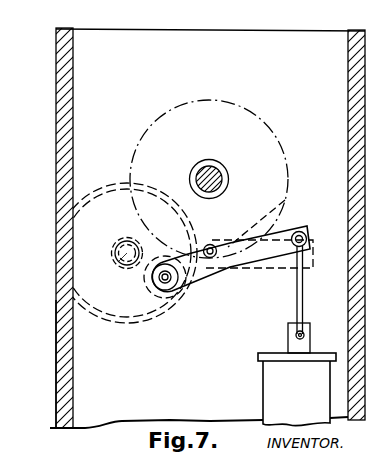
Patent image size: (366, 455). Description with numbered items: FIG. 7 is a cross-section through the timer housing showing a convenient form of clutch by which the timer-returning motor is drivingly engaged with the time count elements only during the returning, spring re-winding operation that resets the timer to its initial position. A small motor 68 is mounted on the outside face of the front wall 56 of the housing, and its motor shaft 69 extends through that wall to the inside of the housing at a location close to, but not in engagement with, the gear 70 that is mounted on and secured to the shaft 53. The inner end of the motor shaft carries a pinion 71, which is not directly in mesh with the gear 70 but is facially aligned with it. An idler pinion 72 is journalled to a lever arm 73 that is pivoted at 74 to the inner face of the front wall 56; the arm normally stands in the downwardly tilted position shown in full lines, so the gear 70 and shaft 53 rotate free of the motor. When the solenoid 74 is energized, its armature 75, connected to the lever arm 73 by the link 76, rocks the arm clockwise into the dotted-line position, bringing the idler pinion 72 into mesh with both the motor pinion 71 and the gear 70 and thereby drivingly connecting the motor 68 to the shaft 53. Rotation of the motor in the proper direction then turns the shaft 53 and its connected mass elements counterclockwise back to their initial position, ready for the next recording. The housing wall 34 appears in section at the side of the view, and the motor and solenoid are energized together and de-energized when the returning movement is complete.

The housing wall 34 is at (52, 339).
The shaft 53 is at (223, 173).
The front wall 56 is at (251, 55).
The motor 68 is at (94, 192).
The motor shaft 69 is at (126, 253).
The gear 70 is at (240, 108).
The pinion 71 is at (123, 267).
The idler pinion 72 is at (164, 285).
The lever arm 73 is at (286, 206).
The pivot / solenoid 74 is at (212, 244).
The armature 75 is at (290, 346).
The link 76 is at (297, 291).